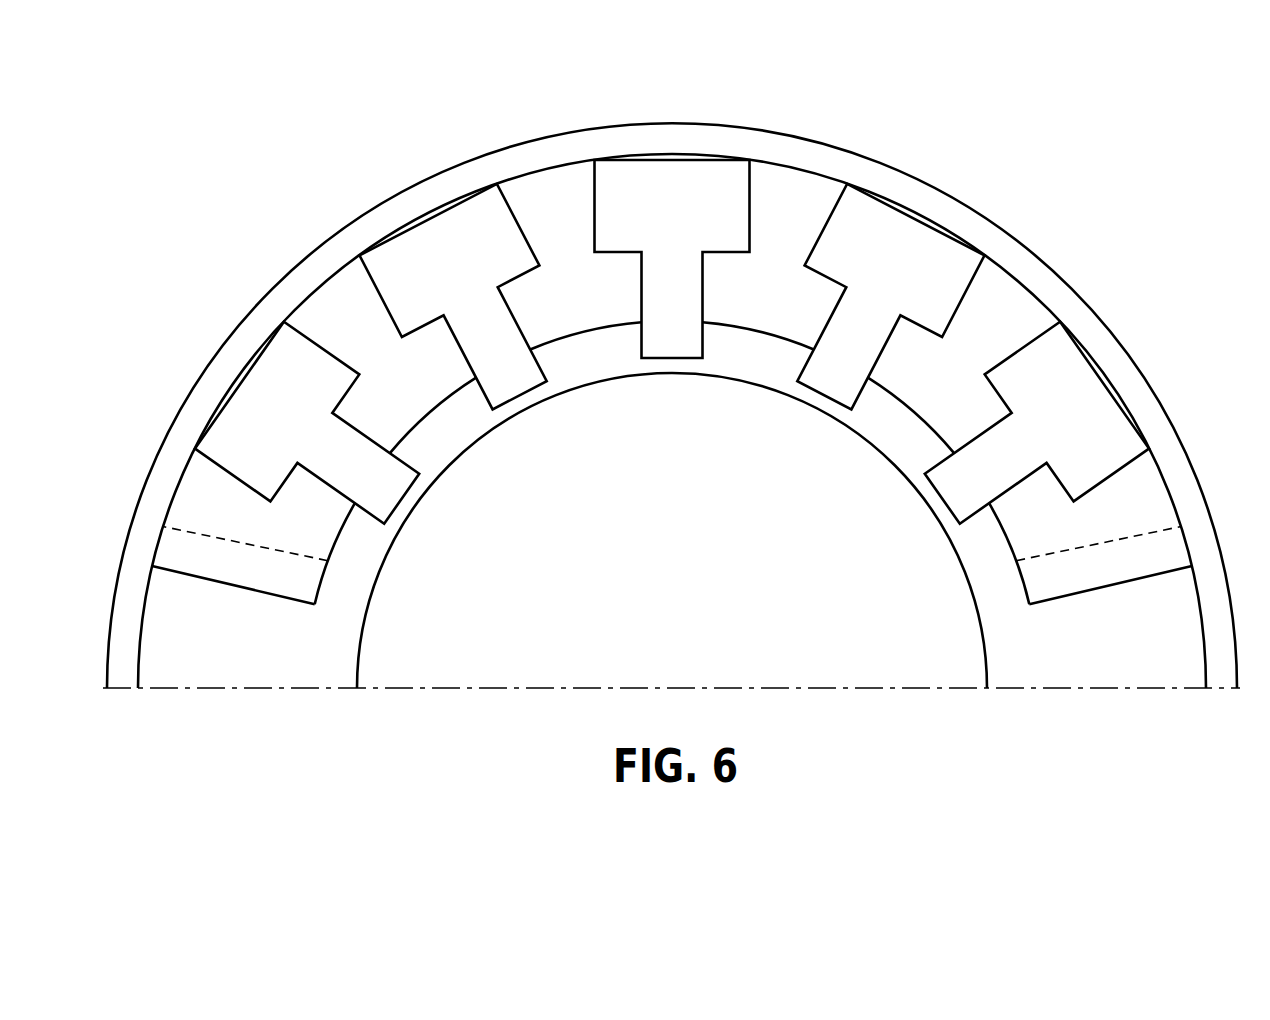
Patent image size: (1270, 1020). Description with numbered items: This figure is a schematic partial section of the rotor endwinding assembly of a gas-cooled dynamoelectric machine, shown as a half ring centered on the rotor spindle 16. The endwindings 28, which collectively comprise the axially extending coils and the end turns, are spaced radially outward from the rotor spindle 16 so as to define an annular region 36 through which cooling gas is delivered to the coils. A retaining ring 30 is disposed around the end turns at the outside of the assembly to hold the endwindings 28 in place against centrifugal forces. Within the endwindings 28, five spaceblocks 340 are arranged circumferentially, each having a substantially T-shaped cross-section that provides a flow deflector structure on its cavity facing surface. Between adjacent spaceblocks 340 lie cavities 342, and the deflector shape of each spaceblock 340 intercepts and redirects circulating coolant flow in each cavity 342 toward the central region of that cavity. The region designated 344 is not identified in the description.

The rotor spindle 16 is at (715, 611).
The endwindings 28 is at (1110, 618).
The retaining ring 30 is at (1147, 412).
The annular region 36 is at (950, 525).
The spaceblock 340 is at (427, 260).
The cavity 342 is at (570, 247).
The slots 344 is at (338, 405).